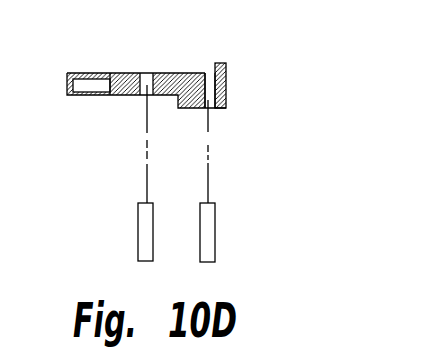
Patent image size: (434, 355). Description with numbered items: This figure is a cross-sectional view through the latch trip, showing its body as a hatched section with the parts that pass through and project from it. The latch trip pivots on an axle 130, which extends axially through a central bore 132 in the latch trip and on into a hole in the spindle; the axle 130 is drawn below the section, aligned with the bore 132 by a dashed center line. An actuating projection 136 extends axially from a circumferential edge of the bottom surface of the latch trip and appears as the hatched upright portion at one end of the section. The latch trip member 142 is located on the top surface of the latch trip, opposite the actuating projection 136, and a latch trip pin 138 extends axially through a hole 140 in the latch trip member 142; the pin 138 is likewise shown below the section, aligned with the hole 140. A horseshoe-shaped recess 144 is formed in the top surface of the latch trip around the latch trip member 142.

The axle 130 is at (141, 212).
The central bore 132 is at (145, 73).
The actuating projection 136 is at (225, 63).
The latch trip pin 138 is at (213, 225).
The hole 140 is at (203, 72).
The latch trip member 142 is at (226, 108).
The horseshoe-shaped recess 144 is at (92, 89).